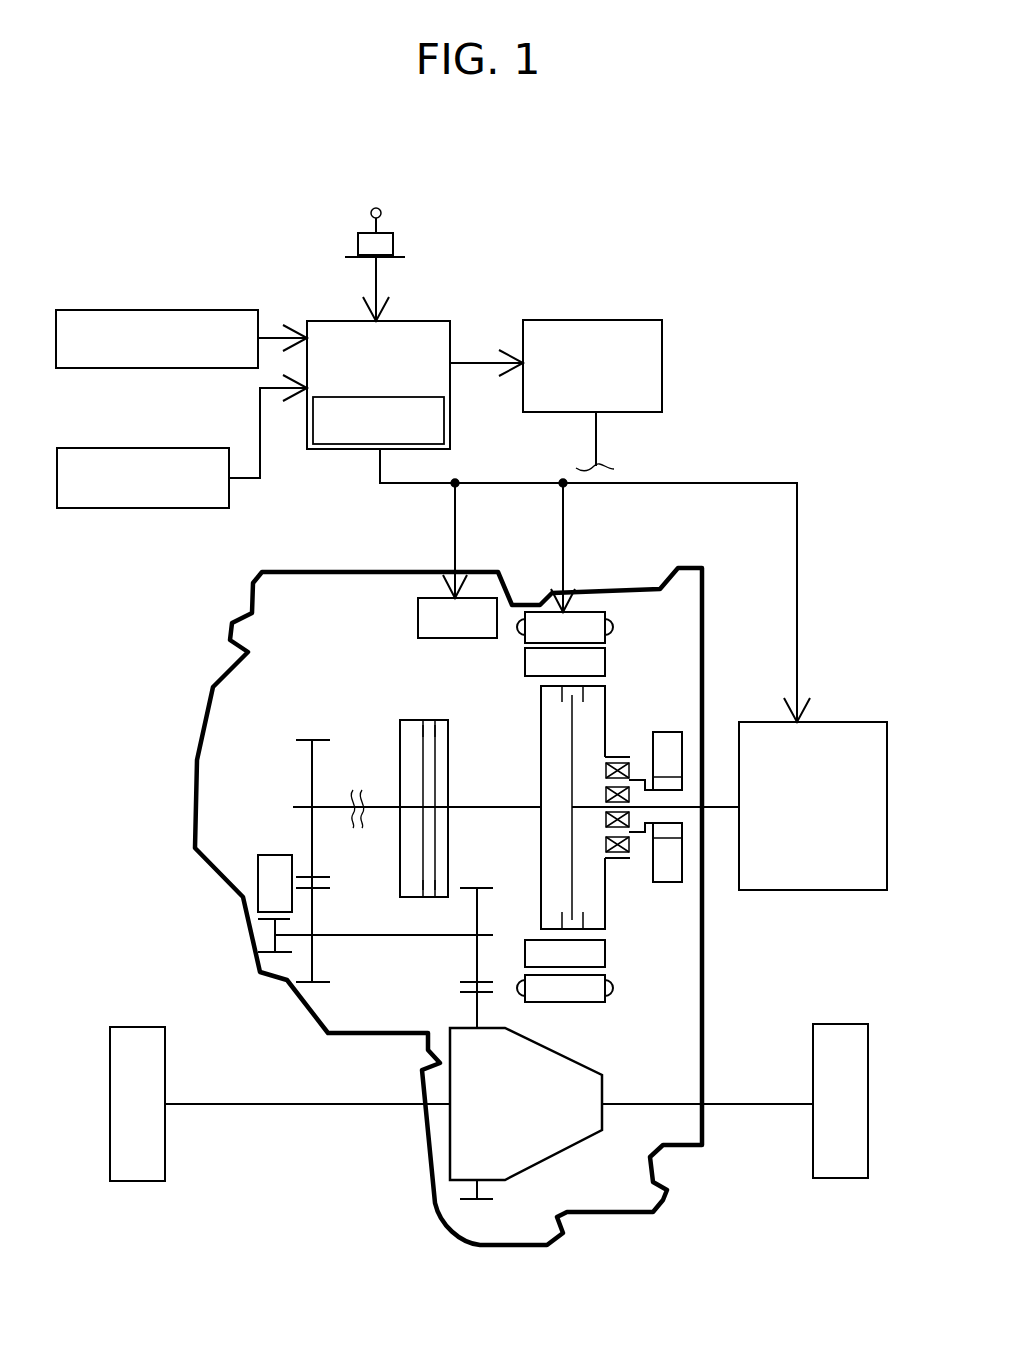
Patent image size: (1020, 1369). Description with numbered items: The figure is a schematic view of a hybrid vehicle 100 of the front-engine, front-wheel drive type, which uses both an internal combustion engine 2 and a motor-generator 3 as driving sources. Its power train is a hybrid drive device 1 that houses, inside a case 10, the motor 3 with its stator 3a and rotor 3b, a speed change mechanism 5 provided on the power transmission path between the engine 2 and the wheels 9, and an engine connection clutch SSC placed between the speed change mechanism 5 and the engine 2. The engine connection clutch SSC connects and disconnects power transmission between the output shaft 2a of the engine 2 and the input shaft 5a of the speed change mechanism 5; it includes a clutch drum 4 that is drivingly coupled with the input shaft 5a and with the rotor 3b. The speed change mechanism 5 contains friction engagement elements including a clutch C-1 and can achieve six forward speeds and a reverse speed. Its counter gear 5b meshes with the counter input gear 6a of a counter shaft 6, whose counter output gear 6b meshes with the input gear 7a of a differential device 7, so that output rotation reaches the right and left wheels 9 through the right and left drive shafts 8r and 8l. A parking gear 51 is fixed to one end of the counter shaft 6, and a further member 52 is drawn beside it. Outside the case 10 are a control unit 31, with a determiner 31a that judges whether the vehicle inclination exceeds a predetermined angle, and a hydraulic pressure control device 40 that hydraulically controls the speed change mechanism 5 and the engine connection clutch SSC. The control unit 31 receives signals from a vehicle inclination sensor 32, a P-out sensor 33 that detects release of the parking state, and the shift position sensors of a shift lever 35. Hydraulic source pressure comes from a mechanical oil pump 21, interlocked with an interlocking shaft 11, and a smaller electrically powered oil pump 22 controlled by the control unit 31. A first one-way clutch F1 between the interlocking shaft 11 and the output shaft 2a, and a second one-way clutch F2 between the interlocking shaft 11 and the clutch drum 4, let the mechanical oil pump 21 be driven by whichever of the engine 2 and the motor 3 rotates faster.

The hybrid vehicle 100 is at (584, 176).
The hybrid drive device 1 is at (752, 287).
The shift lever 35 is at (372, 206).
The vehicle inclination sensor 32 is at (108, 309).
The P-out sensor 33 is at (108, 447).
The control unit 31 is at (420, 320).
The determiner 31a is at (444, 419).
The hydraulic pressure control device 40 is at (632, 320).
The case 10 is at (353, 571).
The electrically powered oil pump 22 is at (418, 620).
The motor-generator 3 is at (587, 601).
The stator 3a is at (613, 638).
The rotor 3b is at (525, 660).
The engine connection clutch SSC is at (597, 700).
The clutch drum 4 is at (541, 744).
The first one-way clutch F1 is at (606, 817).
The second one-way clutch F2 is at (606, 845).
The mechanical oil pump 21 is at (668, 731).
The interlocking shaft 11 is at (634, 838).
The output shaft 2a is at (722, 805).
The internal combustion engine 2 is at (848, 720).
The speed change mechanism 5 is at (330, 720).
The input shaft 5a is at (480, 808).
The counter gear 5b is at (316, 753).
The clutch C-1 is at (433, 714).
The parking gear 52 is at (273, 855).
The parking gear 51 is at (262, 924).
The counter shaft 6 is at (384, 934).
The counter input gear 6a is at (318, 958).
The counter output gear 6b is at (472, 960).
The differential device 7 is at (580, 1058).
The input gear 7a is at (467, 1008).
The left drive shaft 8l is at (272, 1100).
The right drive shaft 8r is at (735, 1100).
The wheels 9 is at (135, 1026).